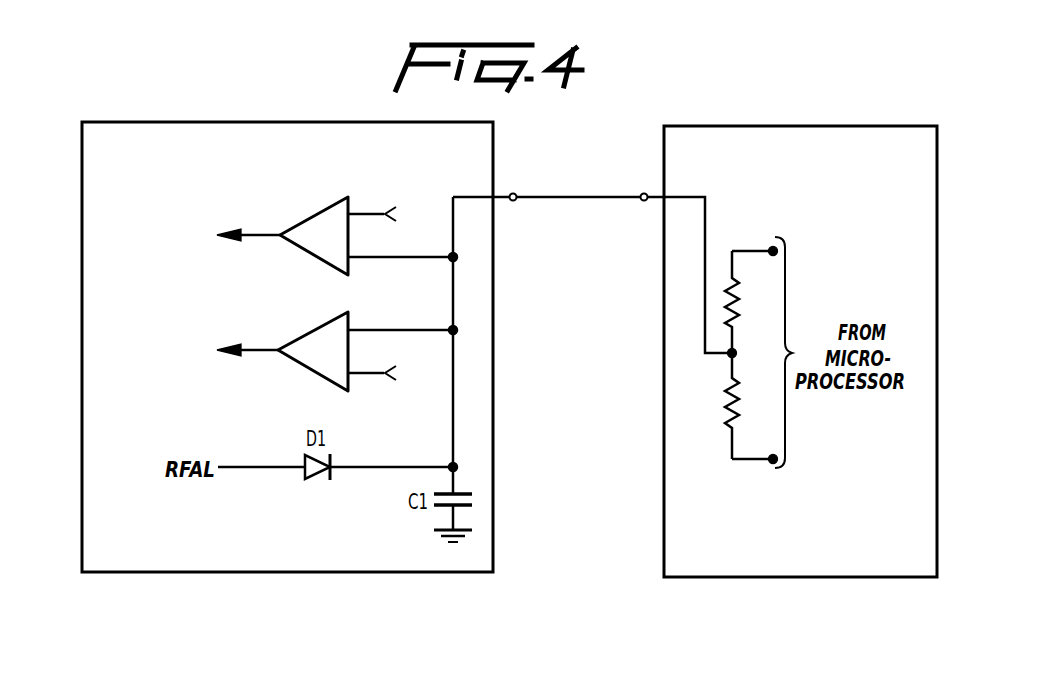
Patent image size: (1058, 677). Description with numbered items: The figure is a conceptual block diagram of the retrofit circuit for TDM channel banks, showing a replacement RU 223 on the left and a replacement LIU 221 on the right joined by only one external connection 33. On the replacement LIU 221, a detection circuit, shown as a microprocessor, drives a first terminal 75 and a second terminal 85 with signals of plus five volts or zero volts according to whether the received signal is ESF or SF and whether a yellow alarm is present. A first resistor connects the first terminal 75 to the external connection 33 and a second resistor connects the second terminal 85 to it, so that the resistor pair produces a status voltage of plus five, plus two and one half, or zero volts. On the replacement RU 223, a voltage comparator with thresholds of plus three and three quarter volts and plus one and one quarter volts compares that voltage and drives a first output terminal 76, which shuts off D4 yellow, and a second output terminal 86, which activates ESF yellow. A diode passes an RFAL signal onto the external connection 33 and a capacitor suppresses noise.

The external connection 33 is at (513, 194).
The first terminal 75 is at (772, 247).
The first output terminal 76 is at (253, 233).
The second terminal 85 is at (769, 466).
The second output terminal 86 is at (254, 346).
The replacement LIU 221 is at (805, 580).
The replacement RU 223 is at (272, 575).